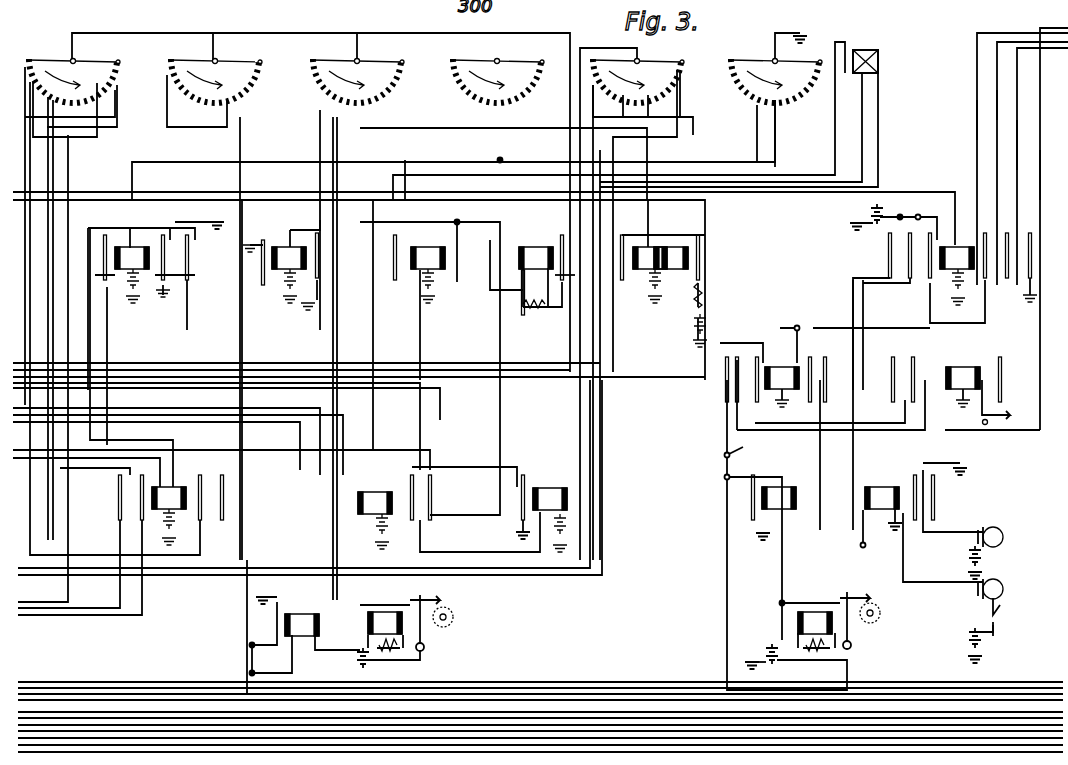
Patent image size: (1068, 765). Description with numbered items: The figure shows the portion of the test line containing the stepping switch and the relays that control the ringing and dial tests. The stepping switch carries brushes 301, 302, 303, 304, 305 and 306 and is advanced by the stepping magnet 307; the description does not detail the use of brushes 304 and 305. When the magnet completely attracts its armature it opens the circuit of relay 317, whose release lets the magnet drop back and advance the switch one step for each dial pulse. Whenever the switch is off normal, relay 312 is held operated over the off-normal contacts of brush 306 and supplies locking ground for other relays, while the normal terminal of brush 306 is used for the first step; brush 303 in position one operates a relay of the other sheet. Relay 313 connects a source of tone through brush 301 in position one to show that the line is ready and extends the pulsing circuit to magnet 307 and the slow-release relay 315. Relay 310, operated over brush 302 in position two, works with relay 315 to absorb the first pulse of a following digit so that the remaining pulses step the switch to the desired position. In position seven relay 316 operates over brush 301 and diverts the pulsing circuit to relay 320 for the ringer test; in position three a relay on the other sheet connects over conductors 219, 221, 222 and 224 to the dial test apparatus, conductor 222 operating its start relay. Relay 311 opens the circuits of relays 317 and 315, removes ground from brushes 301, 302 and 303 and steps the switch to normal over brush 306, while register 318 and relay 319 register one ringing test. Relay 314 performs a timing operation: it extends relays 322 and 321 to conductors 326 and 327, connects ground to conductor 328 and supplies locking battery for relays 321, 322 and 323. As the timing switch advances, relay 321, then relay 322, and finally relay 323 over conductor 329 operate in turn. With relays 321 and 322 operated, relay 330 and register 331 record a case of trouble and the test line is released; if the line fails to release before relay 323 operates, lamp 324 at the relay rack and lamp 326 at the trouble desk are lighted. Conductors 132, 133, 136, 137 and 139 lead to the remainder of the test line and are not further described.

The brush 301 is at (74, 70).
The brush 302 is at (216, 70).
The brush 303 is at (358, 70).
The selector switch 304 is at (498, 70).
The selector switch 305 is at (638, 70).
The brush 306 is at (752, 62).
The stepping magnet 307 is at (880, 60).
The relay 310 is at (670, 247).
The relay 311 is at (420, 247).
The relay 312 is at (143, 272).
The relay 313 is at (173, 487).
The relay 314 is at (965, 245).
The relay 315 is at (528, 247).
The relay 316 is at (378, 500).
The relay 317 is at (283, 247).
The register 318 is at (385, 612).
The relay 319 is at (305, 614).
The relay 320 is at (553, 488).
The relay 321 is at (965, 362).
The relay 322 is at (770, 367).
The relay 323 is at (887, 487).
The lamp 324 is at (1000, 522).
The conductor 326 is at (973, 107).
The conductor 327 is at (993, 82).
The conductor 328 is at (1017, 147).
The conductor 329 is at (1040, 183).
The relay 330 is at (787, 487).
The register 331 is at (815, 612).
The line conductor 132 is at (37, 731).
The line conductor 133 is at (62, 752).
The line conductor 136 is at (110, 725).
The line conductor 137 is at (142, 738).
The line conductor 139 is at (193, 728).
The conductor 219 is at (470, 700).
The conductor 221 is at (537, 678).
The conductor 222 is at (570, 745).
The conductor 224 is at (672, 678).